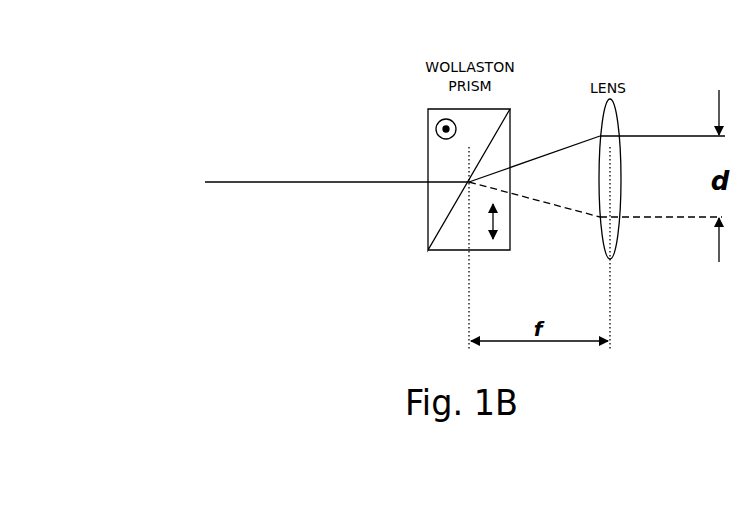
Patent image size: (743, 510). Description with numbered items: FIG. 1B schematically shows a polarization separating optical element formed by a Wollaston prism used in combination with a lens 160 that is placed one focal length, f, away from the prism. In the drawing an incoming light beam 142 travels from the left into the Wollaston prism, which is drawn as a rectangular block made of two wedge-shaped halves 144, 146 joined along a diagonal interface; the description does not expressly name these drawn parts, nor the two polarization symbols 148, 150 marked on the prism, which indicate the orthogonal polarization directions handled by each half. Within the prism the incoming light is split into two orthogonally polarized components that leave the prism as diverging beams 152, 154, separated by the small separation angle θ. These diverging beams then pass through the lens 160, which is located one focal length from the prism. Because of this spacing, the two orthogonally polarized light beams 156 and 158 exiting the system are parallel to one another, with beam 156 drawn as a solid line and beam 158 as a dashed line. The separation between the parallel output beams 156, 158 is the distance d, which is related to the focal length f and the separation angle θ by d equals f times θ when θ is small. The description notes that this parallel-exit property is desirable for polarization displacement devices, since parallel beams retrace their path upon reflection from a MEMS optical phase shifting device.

The input light beam 142 is at (223, 192).
The first prism half of Wollaston prism 144 is at (437, 222).
The second prism half of Wollaston prism 146 is at (452, 240).
The polarization direction indicator (out of plane) 148 is at (428, 110).
The polarization direction indicator (in plane) 150 is at (500, 225).
The first polarized beam 152 is at (579, 138).
The second polarized beam 154 is at (583, 219).
The orthogonally polarized light beam 156 is at (656, 132).
The orthogonally polarized light beam 158 is at (655, 222).
The lens 160 is at (619, 243).